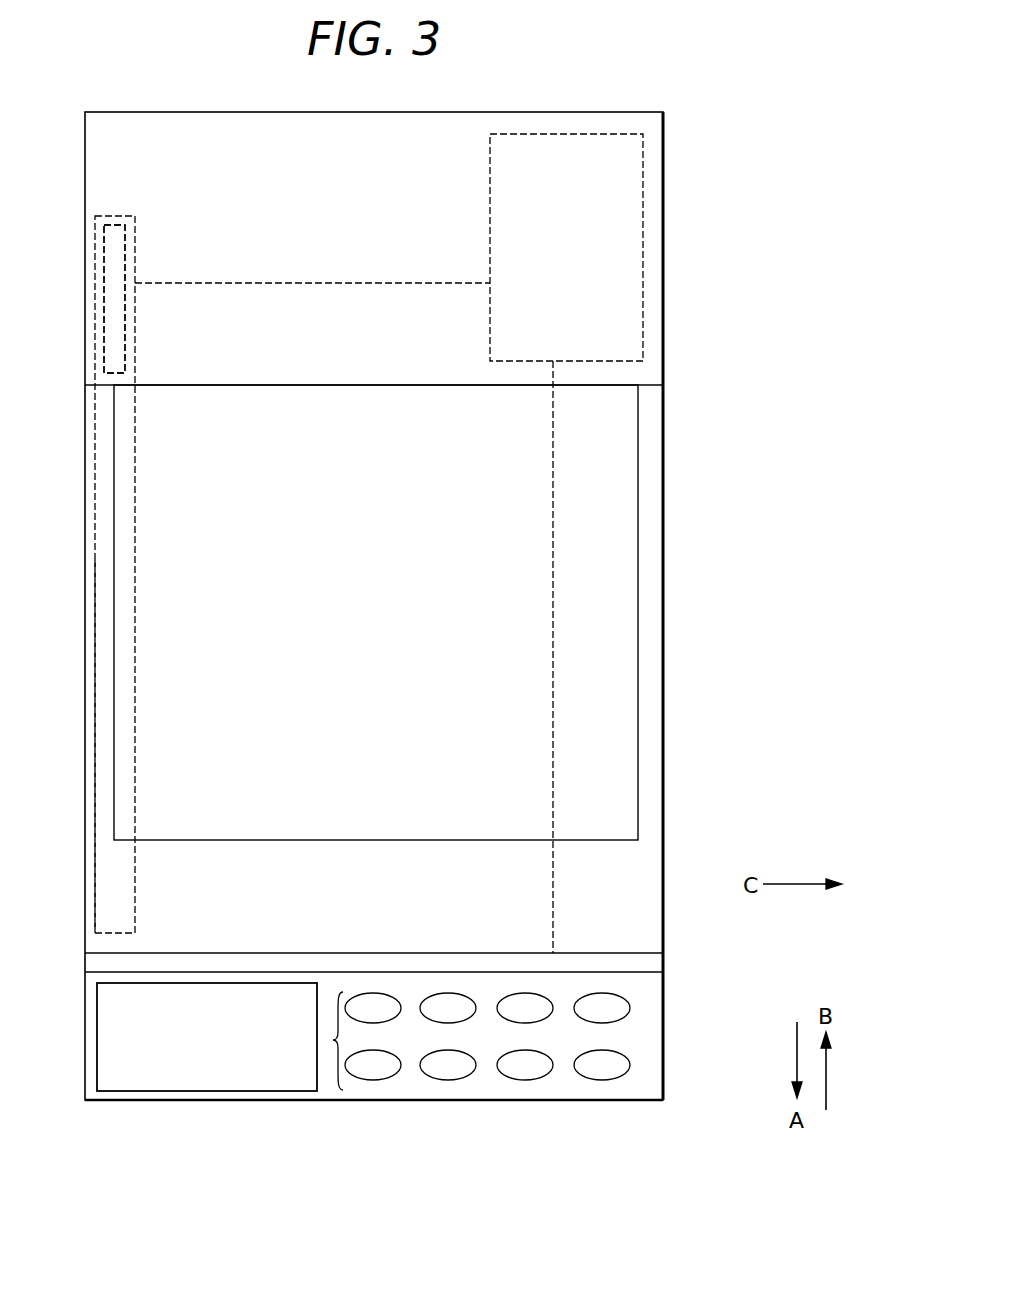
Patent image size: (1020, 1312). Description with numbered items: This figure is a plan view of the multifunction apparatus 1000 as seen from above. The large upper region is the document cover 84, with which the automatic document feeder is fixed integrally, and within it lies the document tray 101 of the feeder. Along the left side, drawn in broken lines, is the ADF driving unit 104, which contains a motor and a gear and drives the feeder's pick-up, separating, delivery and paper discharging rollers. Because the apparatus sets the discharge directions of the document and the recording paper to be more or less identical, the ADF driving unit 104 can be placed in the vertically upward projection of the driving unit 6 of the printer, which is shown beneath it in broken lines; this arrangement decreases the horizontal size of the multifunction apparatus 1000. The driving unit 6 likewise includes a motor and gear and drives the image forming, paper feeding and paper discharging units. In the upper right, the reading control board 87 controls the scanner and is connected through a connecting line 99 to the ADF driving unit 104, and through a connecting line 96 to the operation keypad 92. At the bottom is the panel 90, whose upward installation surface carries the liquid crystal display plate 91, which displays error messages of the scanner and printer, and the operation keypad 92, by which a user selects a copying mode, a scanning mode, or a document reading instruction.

The multifunction apparatus 1000 is at (457, 633).
The document cover 84 is at (653, 712).
The document tray 101 is at (620, 567).
The ADF driving unit 104 is at (112, 226).
The driving unit 6 is at (137, 560).
The connecting line 99 is at (336, 282).
The reading control board 87 is at (628, 201).
The connecting line 96 is at (553, 492).
The panel 90 is at (423, 1023).
The liquid crystal display plate 91 is at (264, 995).
The operation keypad 92 is at (333, 1040).